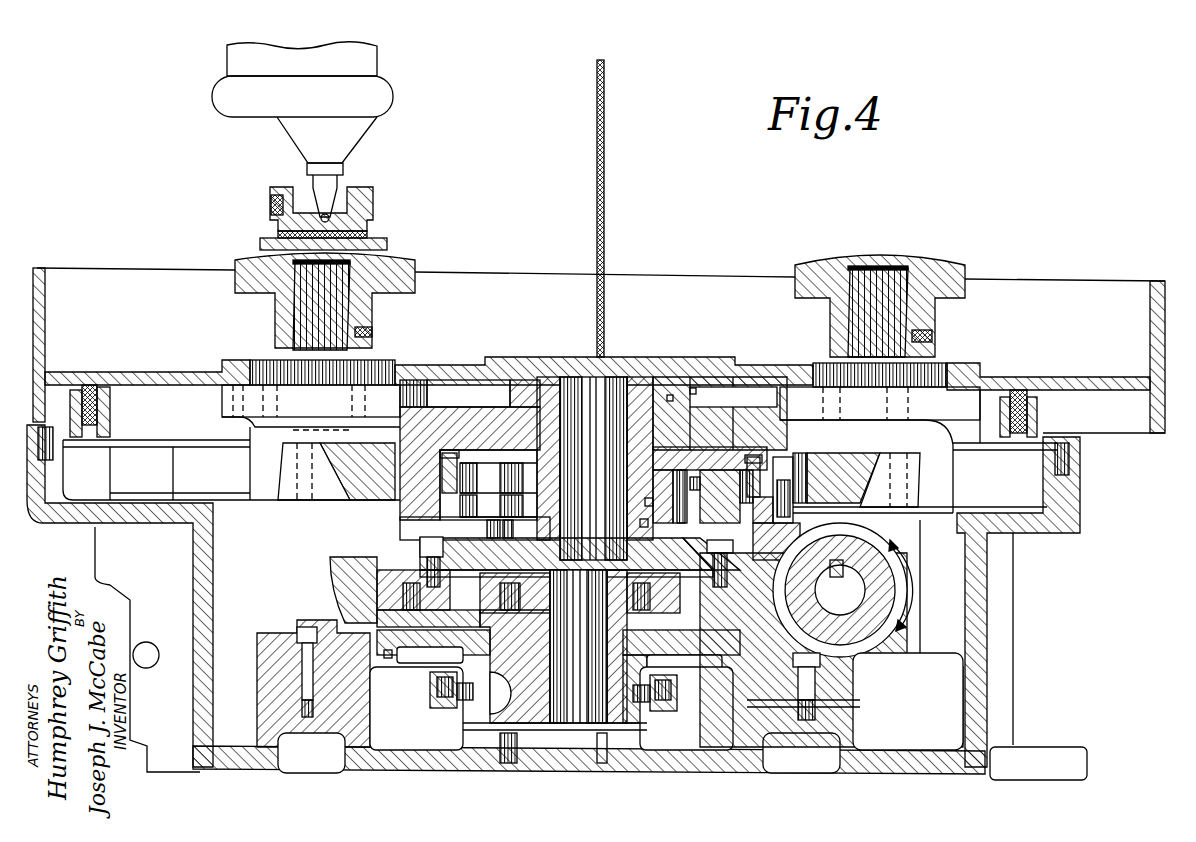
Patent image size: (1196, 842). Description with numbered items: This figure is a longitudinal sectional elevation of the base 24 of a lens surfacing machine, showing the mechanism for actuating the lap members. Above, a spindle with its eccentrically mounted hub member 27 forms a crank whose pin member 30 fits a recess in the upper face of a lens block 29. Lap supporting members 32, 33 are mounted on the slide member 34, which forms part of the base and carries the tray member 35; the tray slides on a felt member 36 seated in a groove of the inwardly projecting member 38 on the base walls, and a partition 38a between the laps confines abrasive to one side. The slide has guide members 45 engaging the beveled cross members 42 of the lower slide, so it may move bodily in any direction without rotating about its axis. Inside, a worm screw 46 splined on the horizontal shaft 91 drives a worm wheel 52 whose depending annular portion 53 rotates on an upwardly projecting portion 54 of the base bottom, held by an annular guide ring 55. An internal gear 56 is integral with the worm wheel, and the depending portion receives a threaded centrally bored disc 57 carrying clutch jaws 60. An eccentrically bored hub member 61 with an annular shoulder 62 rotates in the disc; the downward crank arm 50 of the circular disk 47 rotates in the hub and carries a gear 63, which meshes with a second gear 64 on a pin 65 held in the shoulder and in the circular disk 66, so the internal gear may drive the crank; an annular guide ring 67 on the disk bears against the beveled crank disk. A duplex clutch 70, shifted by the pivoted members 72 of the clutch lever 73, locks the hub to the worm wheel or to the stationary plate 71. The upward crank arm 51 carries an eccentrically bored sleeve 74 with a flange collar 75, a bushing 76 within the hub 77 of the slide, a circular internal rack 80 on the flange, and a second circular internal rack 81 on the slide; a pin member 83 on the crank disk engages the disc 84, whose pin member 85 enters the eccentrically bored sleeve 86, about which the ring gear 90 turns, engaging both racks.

The base 24 is at (985, 590).
The hub member 27 is at (375, 70).
The lens block 29 is at (372, 198).
The pin member 30 is at (327, 188).
The lap supporting member 32 is at (937, 366).
The lap supporting member 33 is at (375, 360).
The slide member 34 is at (487, 418).
The tray member 35 is at (1150, 316).
The felt member 36 is at (112, 402).
The inwardly projecting member 38 is at (72, 443).
The partition 38a is at (604, 185).
The cross member 42 is at (343, 460).
The guide member 45 is at (287, 497).
The worm screw 46 is at (870, 640).
The circular disk 47 is at (587, 550).
The crank arm 50 is at (572, 710).
The crank arm 51 is at (617, 377).
The worm wheel 52 is at (333, 568).
The depending annular portion 53 is at (360, 690).
The upwardly projecting portion 54 is at (337, 727).
The annular guide ring 55 is at (300, 627).
The internal gear 56 is at (355, 572).
The threaded centrally bored disc 57 is at (390, 657).
The clutch jaws 60 is at (467, 655).
The hub member 61 is at (513, 707).
The annular shoulder 62 is at (377, 612).
The gear 63 is at (618, 578).
The second gear 64 is at (417, 583).
The pin 65 is at (493, 622).
The circular disk 66 is at (427, 560).
The annular guide ring 67 is at (722, 545).
The duplex clutch 70 is at (537, 737).
The stationary plate 71 is at (633, 745).
The pivoted members 72 is at (460, 702).
The clutch lever 73 is at (445, 703).
The eccentrically bored sleeve 74 is at (640, 380).
The flange collar 75 is at (752, 455).
The bushing 76 is at (675, 397).
The hub 77 is at (692, 392).
The circular internal rack 80 is at (455, 463).
The second circular internal rack 81 is at (443, 513).
The pin member 83 is at (487, 527).
The disc 84 is at (647, 523).
The pin member 85 is at (653, 502).
The eccentrically bored sleeve 86 is at (690, 467).
The ring gear 90 is at (712, 467).
The horizontal shaft 91 is at (880, 628).